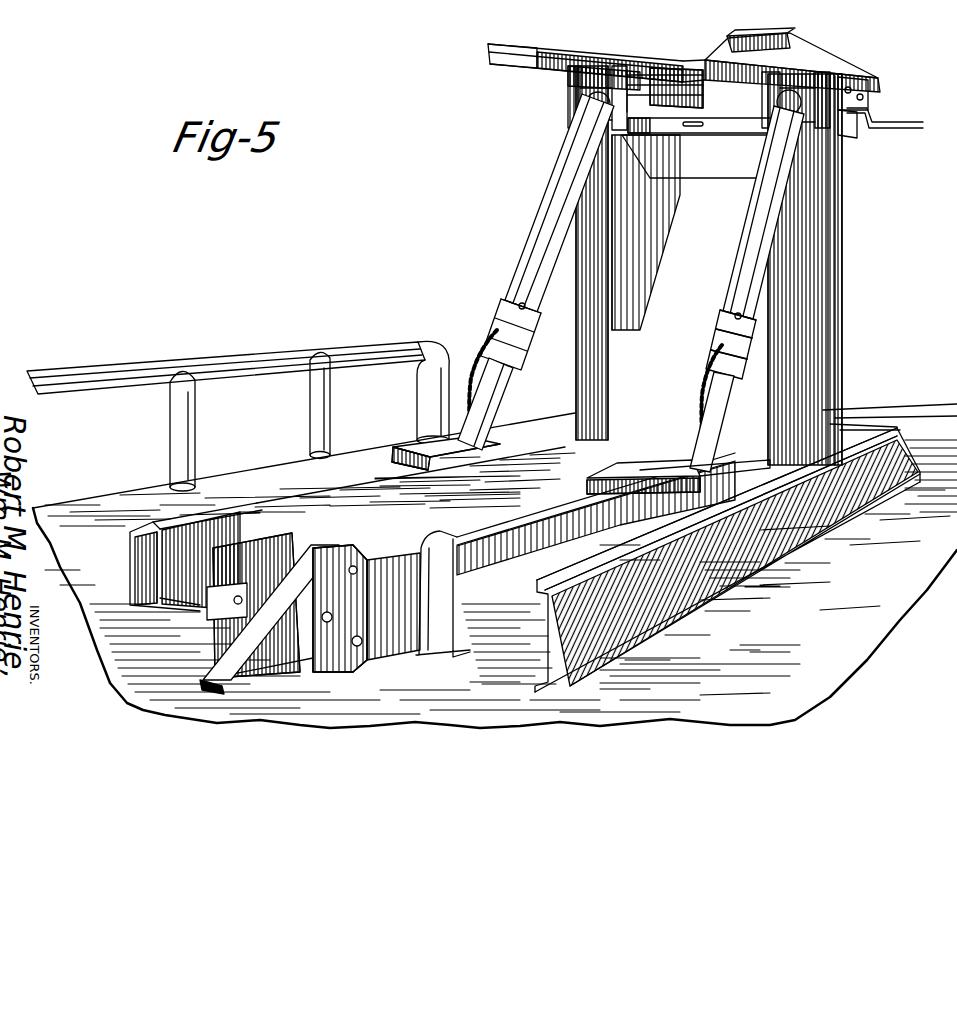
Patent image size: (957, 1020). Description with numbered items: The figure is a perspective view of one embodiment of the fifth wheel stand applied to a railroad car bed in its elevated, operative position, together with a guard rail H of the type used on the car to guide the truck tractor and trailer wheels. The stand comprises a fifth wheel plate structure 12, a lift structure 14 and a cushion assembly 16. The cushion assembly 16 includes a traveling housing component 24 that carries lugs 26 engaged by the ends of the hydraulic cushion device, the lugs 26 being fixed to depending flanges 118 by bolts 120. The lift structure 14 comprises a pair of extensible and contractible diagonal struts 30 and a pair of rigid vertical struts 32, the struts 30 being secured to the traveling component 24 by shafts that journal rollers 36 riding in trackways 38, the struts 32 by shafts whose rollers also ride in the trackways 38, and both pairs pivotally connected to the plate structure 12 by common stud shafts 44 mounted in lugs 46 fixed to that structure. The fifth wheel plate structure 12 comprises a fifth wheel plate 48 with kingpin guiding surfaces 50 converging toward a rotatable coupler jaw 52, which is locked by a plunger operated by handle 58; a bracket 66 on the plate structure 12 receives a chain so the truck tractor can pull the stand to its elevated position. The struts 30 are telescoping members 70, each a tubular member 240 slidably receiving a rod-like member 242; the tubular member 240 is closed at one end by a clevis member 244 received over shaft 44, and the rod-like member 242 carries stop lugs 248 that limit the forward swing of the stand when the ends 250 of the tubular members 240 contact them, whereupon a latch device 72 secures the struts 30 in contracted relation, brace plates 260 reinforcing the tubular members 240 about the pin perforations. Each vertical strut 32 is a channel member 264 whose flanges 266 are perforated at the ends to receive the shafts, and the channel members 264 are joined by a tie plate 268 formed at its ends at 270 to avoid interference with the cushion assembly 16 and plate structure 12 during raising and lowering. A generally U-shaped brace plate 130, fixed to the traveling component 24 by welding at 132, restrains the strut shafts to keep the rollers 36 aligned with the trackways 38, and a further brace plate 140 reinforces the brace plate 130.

The fifth wheel plate structure 12 is at (884, 55).
The lift structure 14 is at (840, 286).
The cushion assembly 16 is at (324, 480).
The traveling housing component 24 is at (399, 489).
The lugs 26 is at (244, 560).
The diagonal struts 30 is at (536, 240).
The vertical struts 32 is at (606, 297).
The rollers 36 is at (520, 656).
The trackways 38 is at (180, 562).
The stud shafts 44 is at (646, 85).
The lugs 46 is at (580, 91).
The fifth wheel plate 48 is at (528, 43).
The kingpin guiding surfaces 50 is at (594, 50).
The coupler jaw 52 is at (690, 63).
The handle 58 is at (924, 128).
The bracket 66 is at (681, 123).
The telescoping members 70 is at (535, 272).
The latch device 72 is at (501, 304).
The depending flanges 118 is at (350, 648).
The bolts 120 is at (362, 645).
The brace plate 130 is at (418, 452).
The welding 132 is at (507, 441).
The further brace plate 140 is at (400, 450).
The tubular member 240 is at (563, 188).
The rod-like member 242 is at (478, 406).
The clevis member 244 is at (580, 114).
The stop lugs 248 is at (518, 351).
The ends 250 is at (731, 360).
The brace plates 260 is at (741, 332).
The channel member 264 is at (602, 258).
The flanges 266 is at (583, 315).
The tie plate 268 is at (645, 333).
The formed ends 270 is at (736, 175).
The guard rails H is at (227, 348).